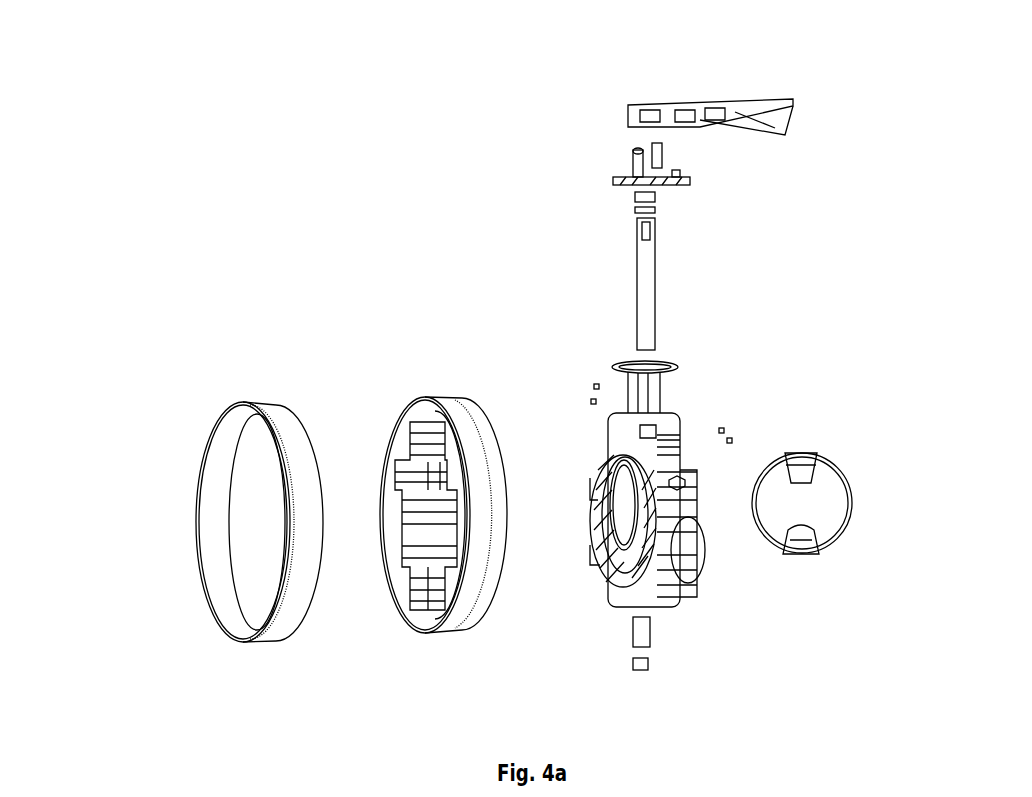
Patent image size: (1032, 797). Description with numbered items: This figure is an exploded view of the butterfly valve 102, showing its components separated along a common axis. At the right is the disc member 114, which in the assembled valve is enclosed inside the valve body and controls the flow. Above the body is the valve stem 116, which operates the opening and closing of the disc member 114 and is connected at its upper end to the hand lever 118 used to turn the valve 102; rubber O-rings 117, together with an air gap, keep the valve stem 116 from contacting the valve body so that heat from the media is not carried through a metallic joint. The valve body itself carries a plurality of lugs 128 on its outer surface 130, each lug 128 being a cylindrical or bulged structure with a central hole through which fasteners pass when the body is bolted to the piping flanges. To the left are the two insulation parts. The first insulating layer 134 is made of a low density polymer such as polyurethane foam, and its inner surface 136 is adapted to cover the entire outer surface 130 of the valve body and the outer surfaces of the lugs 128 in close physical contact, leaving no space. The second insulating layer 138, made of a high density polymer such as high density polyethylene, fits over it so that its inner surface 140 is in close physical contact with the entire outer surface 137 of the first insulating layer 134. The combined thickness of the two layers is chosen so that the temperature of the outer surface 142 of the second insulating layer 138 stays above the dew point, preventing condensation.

The butterfly valve 102 is at (458, 168).
The disc member 114 is at (813, 487).
The valve stem 116 is at (640, 297).
The rubber O-rings 117 is at (650, 210).
The hand lever 118 is at (717, 100).
The lugs 128 is at (677, 480).
The outer surface of the valve body 130 is at (653, 458).
The first insulating layer 134 is at (402, 388).
The inner surface of the first insulating layer 136 is at (398, 540).
The outer surface of the first insulating layer 137 is at (480, 542).
The second insulating layer 138 is at (235, 362).
The inner surface of the second insulating layer 140 is at (217, 468).
The outer surface of the second insulating layer 142 is at (300, 585).